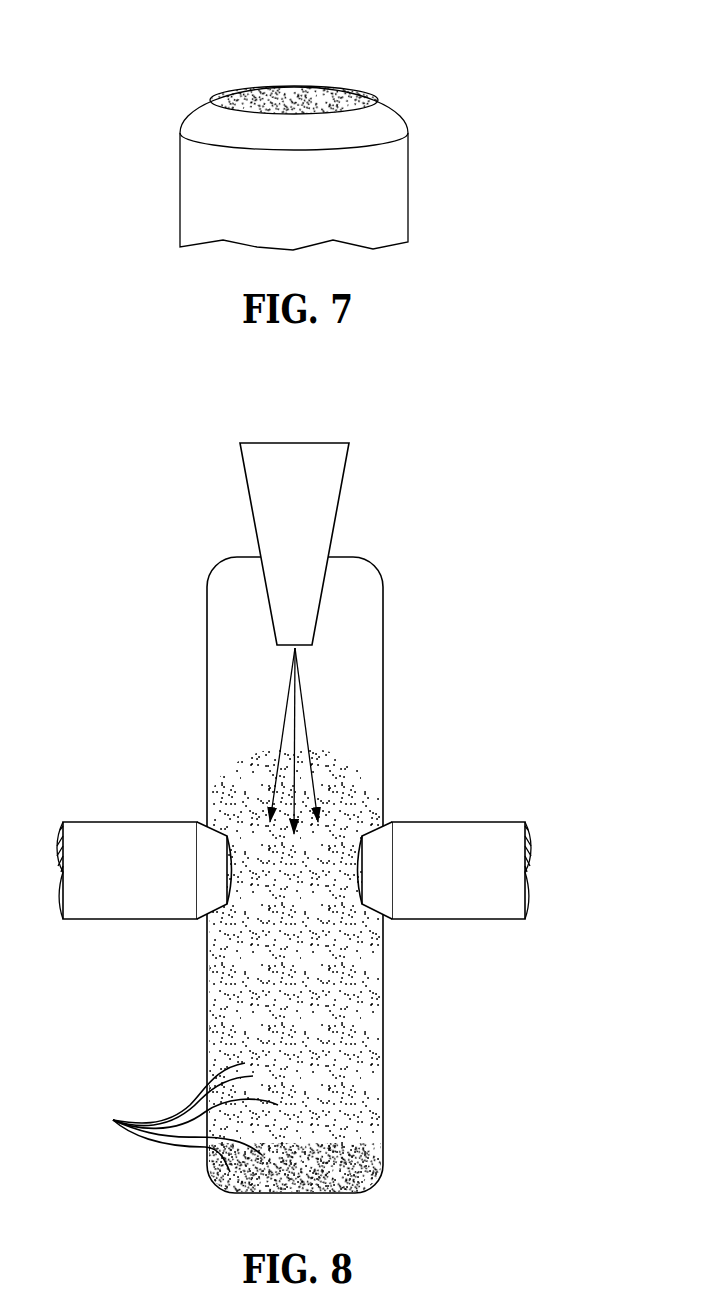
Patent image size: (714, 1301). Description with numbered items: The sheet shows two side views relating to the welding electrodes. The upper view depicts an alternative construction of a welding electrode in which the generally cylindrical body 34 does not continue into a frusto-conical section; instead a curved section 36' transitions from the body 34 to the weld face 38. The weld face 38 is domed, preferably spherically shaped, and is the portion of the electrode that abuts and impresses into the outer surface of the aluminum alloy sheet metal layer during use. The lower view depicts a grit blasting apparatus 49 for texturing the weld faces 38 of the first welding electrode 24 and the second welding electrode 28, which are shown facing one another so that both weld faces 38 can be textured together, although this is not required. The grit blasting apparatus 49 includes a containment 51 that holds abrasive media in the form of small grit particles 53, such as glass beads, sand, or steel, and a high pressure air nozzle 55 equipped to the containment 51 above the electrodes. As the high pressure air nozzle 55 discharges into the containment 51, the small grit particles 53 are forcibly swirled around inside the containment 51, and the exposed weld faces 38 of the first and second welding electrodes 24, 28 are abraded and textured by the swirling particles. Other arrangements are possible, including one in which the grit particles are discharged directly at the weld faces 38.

In FIG. 7, the cylindrical body 34 is at (180, 190).
In FIG. 7, the curved section 36' is at (263, 95).
In FIG. 7, the weld face 38 is at (291, 109).
In FIG. 8, the weld face 38 is at (230, 870).
In FIG. 8, the grit blasting apparatus 49 is at (438, 678).
In FIG. 8, the containment 51 is at (207, 625).
In FIG. 8, the high pressure air nozzle 55 is at (340, 495).
In FIG. 8, the first welding electrode 24 is at (124, 921).
In FIG. 8, the second welding electrode 28 is at (501, 822).
In FIG. 8, the small grit particles 53 is at (181, 1117).